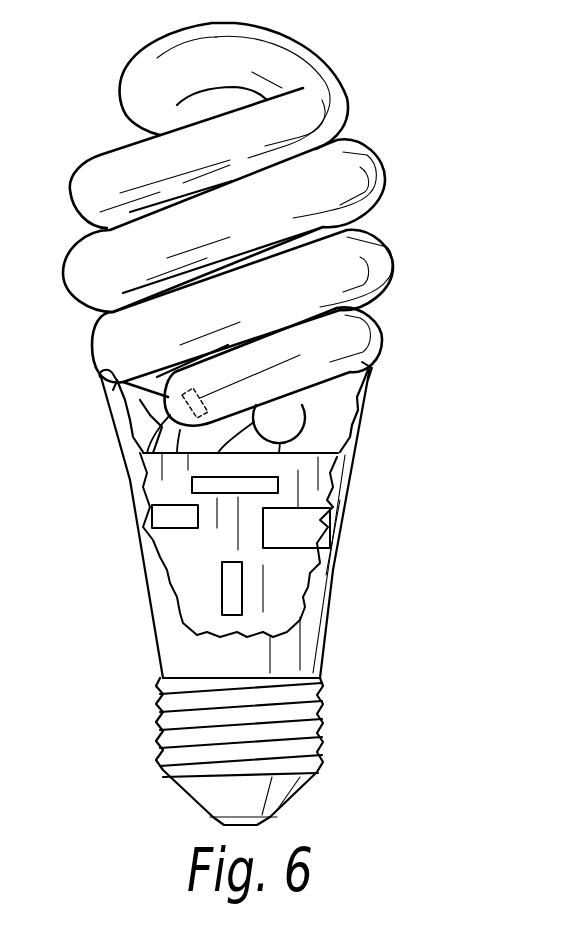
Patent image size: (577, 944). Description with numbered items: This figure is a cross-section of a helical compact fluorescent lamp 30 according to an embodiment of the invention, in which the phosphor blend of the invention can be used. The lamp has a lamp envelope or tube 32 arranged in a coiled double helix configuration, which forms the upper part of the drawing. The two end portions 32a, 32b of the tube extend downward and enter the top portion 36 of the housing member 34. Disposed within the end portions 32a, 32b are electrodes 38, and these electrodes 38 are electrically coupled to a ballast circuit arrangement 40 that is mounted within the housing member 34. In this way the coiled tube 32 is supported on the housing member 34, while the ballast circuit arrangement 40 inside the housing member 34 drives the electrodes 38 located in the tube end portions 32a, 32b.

The helical compact fluorescent lamp 30 is at (466, 220).
The lamp envelope or tube 32 is at (352, 108).
The end portion 32a is at (173, 418).
The end portion 32b is at (290, 415).
The housing member 34 is at (345, 512).
The top portion 36 is at (372, 368).
The electrodes 38 is at (113, 402).
The ballast circuit arrangement 40 is at (152, 517).